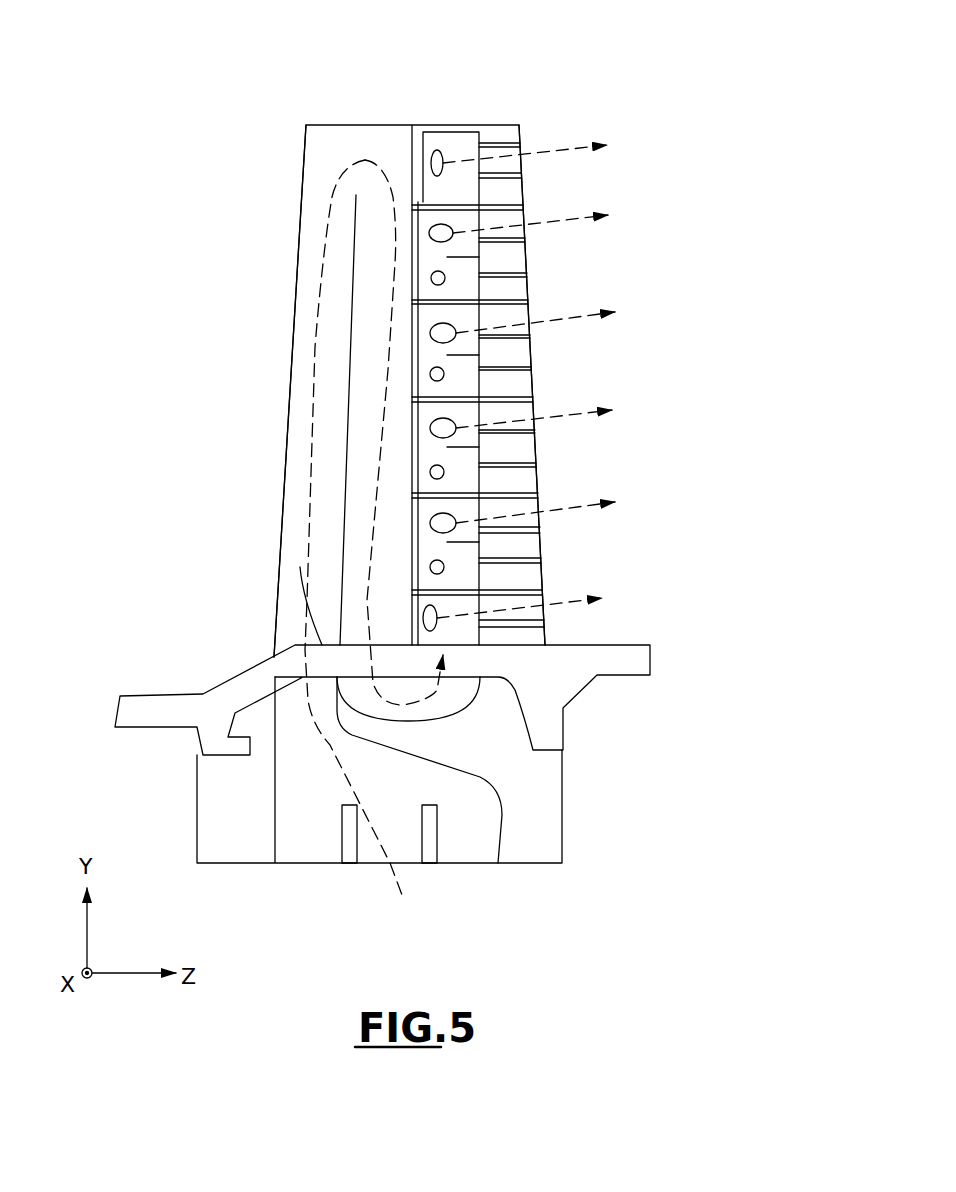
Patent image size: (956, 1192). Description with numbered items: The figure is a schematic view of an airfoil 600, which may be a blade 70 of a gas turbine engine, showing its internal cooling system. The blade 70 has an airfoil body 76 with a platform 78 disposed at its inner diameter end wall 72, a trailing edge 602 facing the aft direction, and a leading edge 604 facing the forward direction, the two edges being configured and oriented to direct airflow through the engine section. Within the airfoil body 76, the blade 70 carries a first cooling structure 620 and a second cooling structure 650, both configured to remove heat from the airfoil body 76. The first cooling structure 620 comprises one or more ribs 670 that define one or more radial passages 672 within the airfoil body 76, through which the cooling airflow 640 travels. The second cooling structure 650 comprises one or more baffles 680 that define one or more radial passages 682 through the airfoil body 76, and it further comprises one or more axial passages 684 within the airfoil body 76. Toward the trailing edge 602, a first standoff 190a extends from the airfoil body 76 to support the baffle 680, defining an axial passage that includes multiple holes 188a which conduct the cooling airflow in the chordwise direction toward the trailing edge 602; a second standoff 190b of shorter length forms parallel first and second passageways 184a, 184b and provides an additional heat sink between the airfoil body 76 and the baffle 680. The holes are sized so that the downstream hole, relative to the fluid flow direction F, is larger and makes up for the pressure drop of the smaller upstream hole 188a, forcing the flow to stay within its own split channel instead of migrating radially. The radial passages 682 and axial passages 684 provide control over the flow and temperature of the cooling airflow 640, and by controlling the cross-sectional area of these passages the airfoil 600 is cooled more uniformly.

The airfoil 600 is at (399, 453).
The blade 70 is at (399, 453).
The inner diameter end wall 72 is at (300, 567).
The airfoil body 76 is at (247, 482).
The platform 78 is at (228, 698).
The trailing edge 602 is at (545, 625).
The leading edge 604 is at (287, 610).
The first cooling structure 620 is at (425, 58).
The cooling airflow 640 is at (327, 240).
The second cooling structure 650 is at (553, 85).
The rib 670 is at (350, 351).
The radial passage 672 is at (327, 392).
The baffle 680 is at (478, 270).
The radial passage 682 is at (450, 633).
The axial passage 684 is at (460, 562).
The first passageway 184a is at (442, 285).
The second passageway 184b is at (450, 227).
The first hole 188a is at (475, 297).
The first standoff 190a is at (478, 176).
The second standoff 190b is at (472, 252).
The fluid flow direction F is at (397, 705).